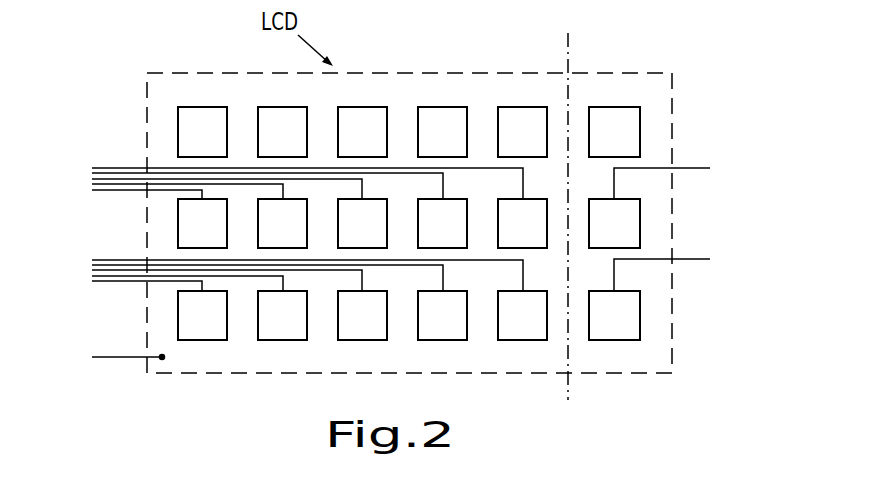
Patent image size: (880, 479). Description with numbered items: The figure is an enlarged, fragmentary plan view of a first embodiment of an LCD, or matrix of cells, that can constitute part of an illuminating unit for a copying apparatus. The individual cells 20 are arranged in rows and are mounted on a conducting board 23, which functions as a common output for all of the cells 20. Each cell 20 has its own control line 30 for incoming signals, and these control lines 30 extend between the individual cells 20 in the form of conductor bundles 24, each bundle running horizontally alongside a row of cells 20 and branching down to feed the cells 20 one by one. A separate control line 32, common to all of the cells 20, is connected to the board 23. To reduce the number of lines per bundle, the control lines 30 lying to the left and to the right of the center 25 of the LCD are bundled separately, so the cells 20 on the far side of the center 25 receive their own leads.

The cell 20 is at (185, 217).
The conducting board 23 is at (665, 93).
The conductor bundle 24 is at (78, 163).
The center 25 is at (568, 50).
The control line 30 is at (98, 260).
The control line 32 is at (110, 355).